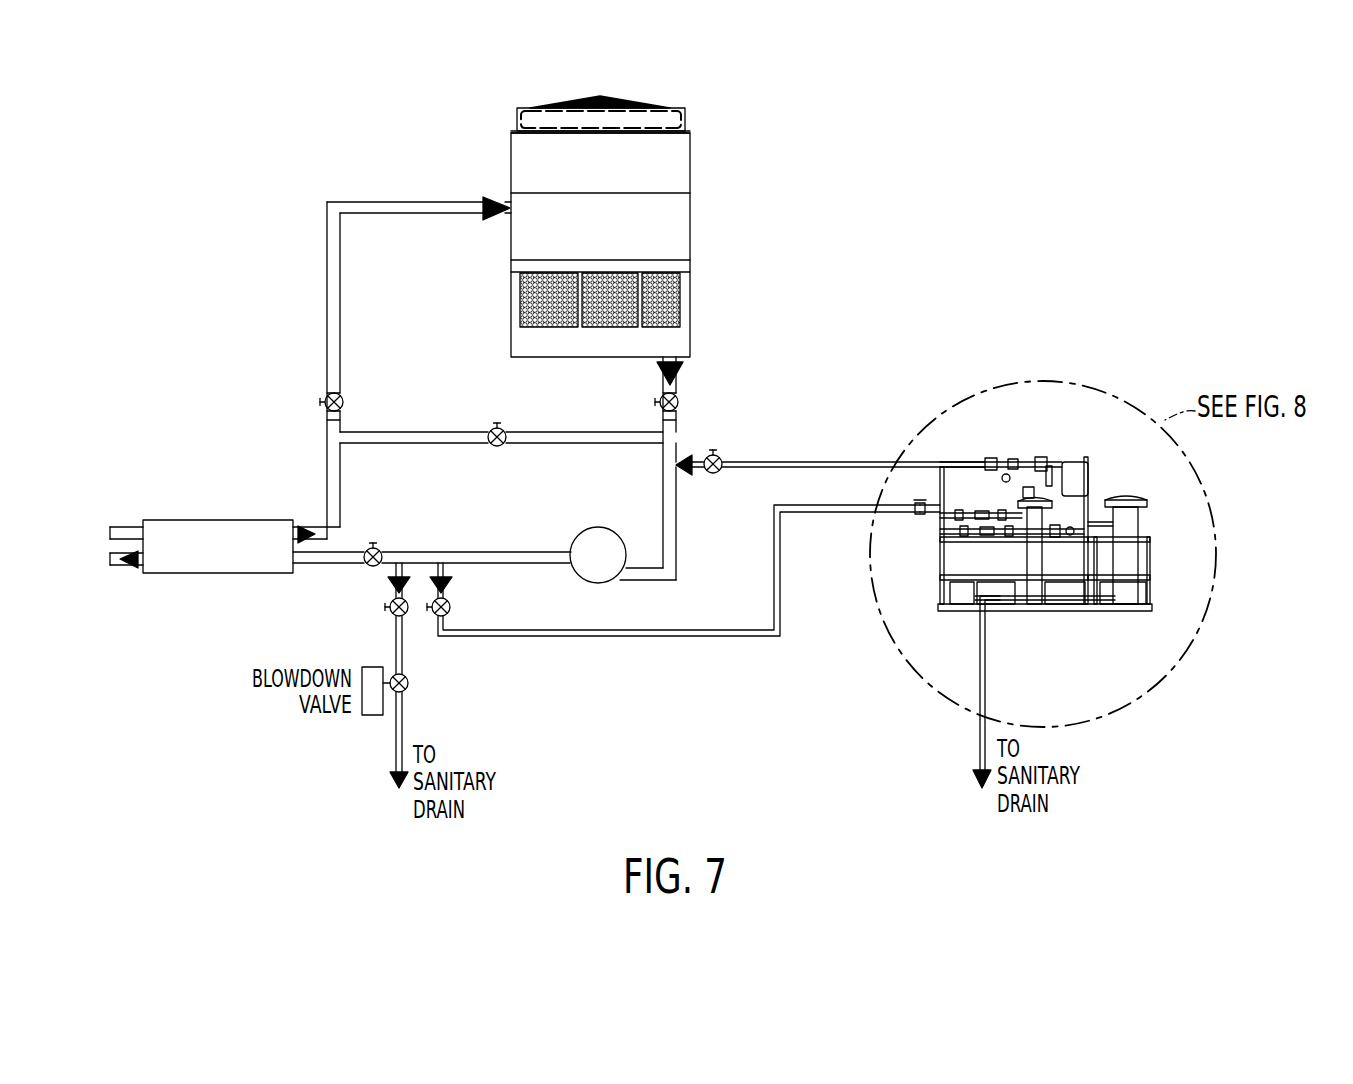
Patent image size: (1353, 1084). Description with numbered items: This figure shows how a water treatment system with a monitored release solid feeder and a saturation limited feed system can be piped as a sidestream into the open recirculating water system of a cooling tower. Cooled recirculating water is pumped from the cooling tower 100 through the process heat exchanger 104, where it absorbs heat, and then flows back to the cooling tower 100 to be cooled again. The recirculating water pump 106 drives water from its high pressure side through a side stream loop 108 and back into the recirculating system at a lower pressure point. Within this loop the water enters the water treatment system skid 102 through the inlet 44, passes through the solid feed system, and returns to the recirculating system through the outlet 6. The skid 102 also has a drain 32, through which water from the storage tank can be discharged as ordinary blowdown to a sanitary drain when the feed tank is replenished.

The cooling tower 100 is at (661, 229).
The process heat exchanger 104 is at (233, 556).
The recirculating water pump 106 is at (590, 538).
The side stream loop 108 is at (571, 634).
The outlet 6 is at (1042, 604).
The inlet 44 is at (919, 507).
The water treatment system skid 102 is at (1128, 528).
The drain 32 is at (995, 603).